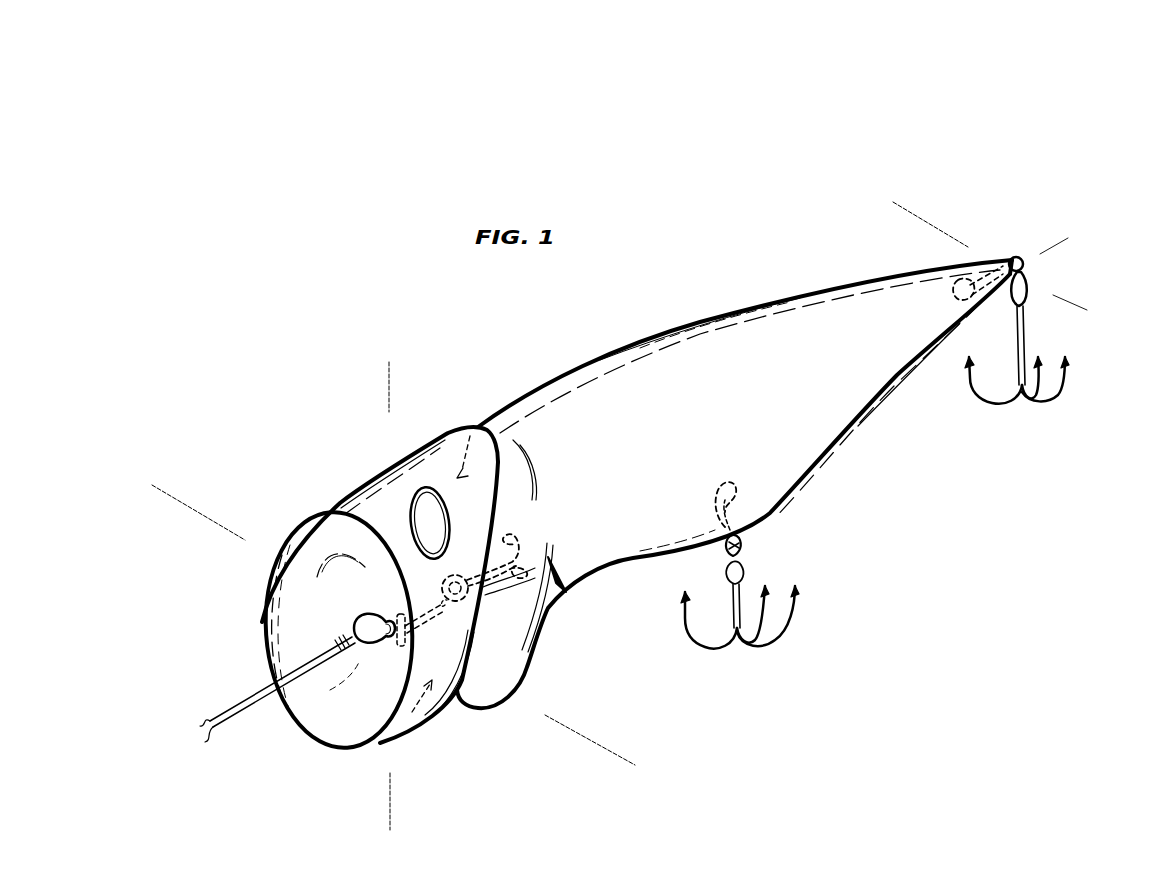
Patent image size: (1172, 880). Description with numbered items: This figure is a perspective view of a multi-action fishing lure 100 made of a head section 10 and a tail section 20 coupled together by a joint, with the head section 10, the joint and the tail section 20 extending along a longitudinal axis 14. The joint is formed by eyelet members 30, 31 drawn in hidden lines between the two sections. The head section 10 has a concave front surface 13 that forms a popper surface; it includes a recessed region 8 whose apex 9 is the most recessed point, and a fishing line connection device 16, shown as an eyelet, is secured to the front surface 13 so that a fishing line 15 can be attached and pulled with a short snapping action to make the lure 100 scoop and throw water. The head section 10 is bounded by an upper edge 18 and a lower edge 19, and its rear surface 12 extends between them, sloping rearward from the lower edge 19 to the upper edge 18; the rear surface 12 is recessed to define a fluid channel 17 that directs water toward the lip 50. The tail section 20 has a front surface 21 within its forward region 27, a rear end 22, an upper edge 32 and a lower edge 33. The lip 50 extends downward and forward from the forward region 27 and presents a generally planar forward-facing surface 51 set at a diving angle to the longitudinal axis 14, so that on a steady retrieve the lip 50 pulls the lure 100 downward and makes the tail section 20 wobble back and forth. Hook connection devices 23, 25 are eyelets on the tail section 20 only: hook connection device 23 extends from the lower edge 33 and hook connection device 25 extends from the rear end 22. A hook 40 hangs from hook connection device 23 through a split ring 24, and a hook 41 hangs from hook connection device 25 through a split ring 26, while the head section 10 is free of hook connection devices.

The fishing lure 100 is at (1048, 183).
The recessed region 8 is at (340, 708).
The apex 9 is at (393, 618).
The head section 10 is at (393, 470).
The rear surface 12 is at (468, 427).
The front surface 13 is at (342, 562).
The longitudinal axis 14 is at (1079, 232).
The fishing line 15 is at (238, 712).
The line connection device 16 is at (365, 650).
The fluid channel 17 is at (407, 733).
The upper edge 18 is at (426, 455).
The lower edge 19 is at (365, 752).
The tail section 20 is at (716, 320).
The front surface 21 is at (492, 530).
The rear end 22 is at (1003, 256).
The hook connection device 23 is at (736, 522).
The split ring 24 is at (742, 550).
The hook connection device 25 is at (1022, 256).
The split ring 26 is at (1027, 284).
The forward region 27 is at (596, 642).
The eyelet member 30 is at (438, 608).
The eyelet member 31 is at (462, 567).
The upper edge 32 is at (790, 292).
The lower edge 33 is at (850, 432).
The hook 40 is at (718, 646).
The hook 41 is at (987, 407).
The lip 50 is at (470, 702).
The forward-facing surface 51 is at (565, 593).